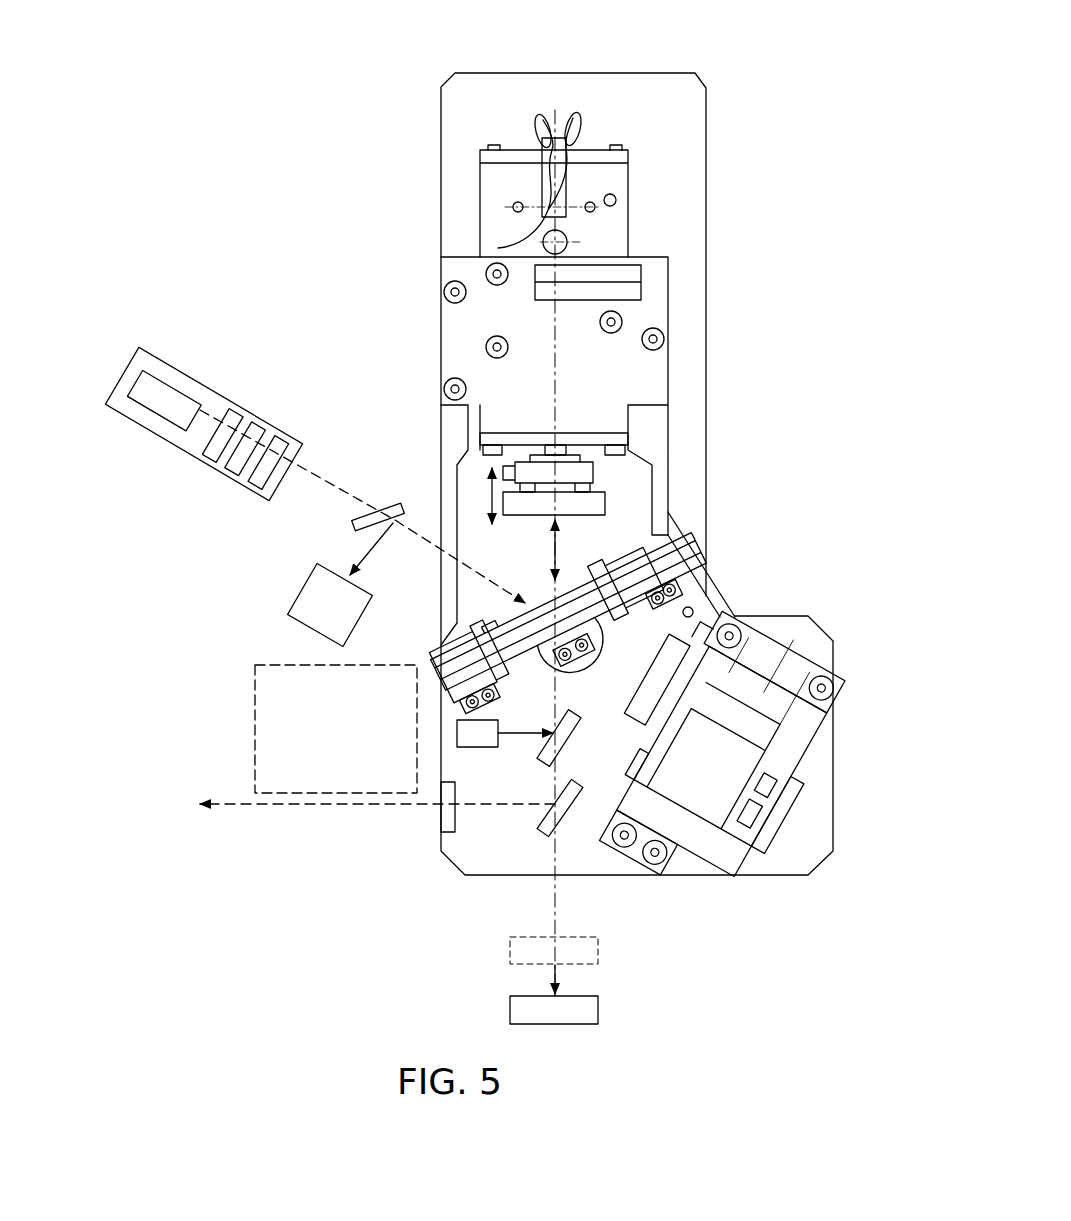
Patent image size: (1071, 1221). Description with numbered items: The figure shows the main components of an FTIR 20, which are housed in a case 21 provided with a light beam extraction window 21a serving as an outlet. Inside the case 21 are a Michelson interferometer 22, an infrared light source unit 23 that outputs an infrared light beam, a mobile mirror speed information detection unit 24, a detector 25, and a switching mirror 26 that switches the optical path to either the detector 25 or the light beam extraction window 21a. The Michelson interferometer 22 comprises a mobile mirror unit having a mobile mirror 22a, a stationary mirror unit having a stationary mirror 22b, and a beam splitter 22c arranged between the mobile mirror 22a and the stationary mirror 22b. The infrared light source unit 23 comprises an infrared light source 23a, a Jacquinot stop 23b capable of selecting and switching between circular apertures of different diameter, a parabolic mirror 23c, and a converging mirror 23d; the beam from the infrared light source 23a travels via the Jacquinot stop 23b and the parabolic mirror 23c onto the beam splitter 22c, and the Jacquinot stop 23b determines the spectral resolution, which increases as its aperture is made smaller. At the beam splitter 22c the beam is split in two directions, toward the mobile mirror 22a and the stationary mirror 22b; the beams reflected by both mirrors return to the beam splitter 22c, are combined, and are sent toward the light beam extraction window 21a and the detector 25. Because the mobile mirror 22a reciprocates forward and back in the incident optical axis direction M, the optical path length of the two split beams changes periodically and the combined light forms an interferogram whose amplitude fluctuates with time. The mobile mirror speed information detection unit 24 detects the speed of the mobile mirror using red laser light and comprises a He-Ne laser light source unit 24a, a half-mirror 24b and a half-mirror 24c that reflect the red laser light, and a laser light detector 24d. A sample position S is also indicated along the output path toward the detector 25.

The FTIR 20 is at (326, 62).
The case 21 is at (706, 196).
The light beam extraction window 21a is at (441, 818).
The Michelson interferometer 22 is at (810, 383).
The mobile mirror 22a is at (633, 456).
The stationary mirror 22b is at (698, 610).
The beam splitter 22c is at (688, 525).
The infrared light source unit 23 is at (214, 422).
The infrared light source 23a is at (170, 392).
The Jacquinot stop 23b is at (225, 465).
The parabolic mirror 23c is at (283, 426).
The converging mirror 23d is at (236, 410).
The mobile mirror speed information detection unit 24 is at (412, 648).
The He-Ne laser light source unit 24a is at (457, 733).
The half-mirror 24b is at (543, 757).
The half-mirror 24c is at (397, 530).
The laser light detector 24d is at (312, 640).
The detector 25 is at (598, 1010).
The switching mirror 26 is at (545, 830).
The measurement object S is at (598, 950).
The incident optical axis direction M is at (474, 499).